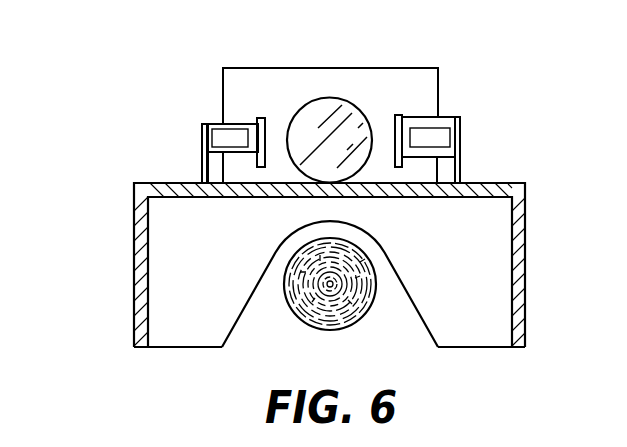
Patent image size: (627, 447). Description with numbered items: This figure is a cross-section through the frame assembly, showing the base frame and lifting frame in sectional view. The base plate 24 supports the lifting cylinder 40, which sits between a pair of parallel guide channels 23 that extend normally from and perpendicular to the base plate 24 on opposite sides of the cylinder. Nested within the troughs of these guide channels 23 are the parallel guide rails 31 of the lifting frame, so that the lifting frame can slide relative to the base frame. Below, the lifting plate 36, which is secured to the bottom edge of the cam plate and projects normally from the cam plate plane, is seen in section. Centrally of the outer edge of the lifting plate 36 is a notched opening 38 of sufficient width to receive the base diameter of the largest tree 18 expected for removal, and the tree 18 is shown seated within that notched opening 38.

The tree 18 is at (313, 322).
The guide channels 23 is at (246, 122).
The base plate 24 is at (413, 98).
The guide rails 31 is at (447, 127).
The lifting plate 36 is at (472, 236).
The notched opening 38 is at (402, 288).
The lifting cylinder 40 is at (316, 97).